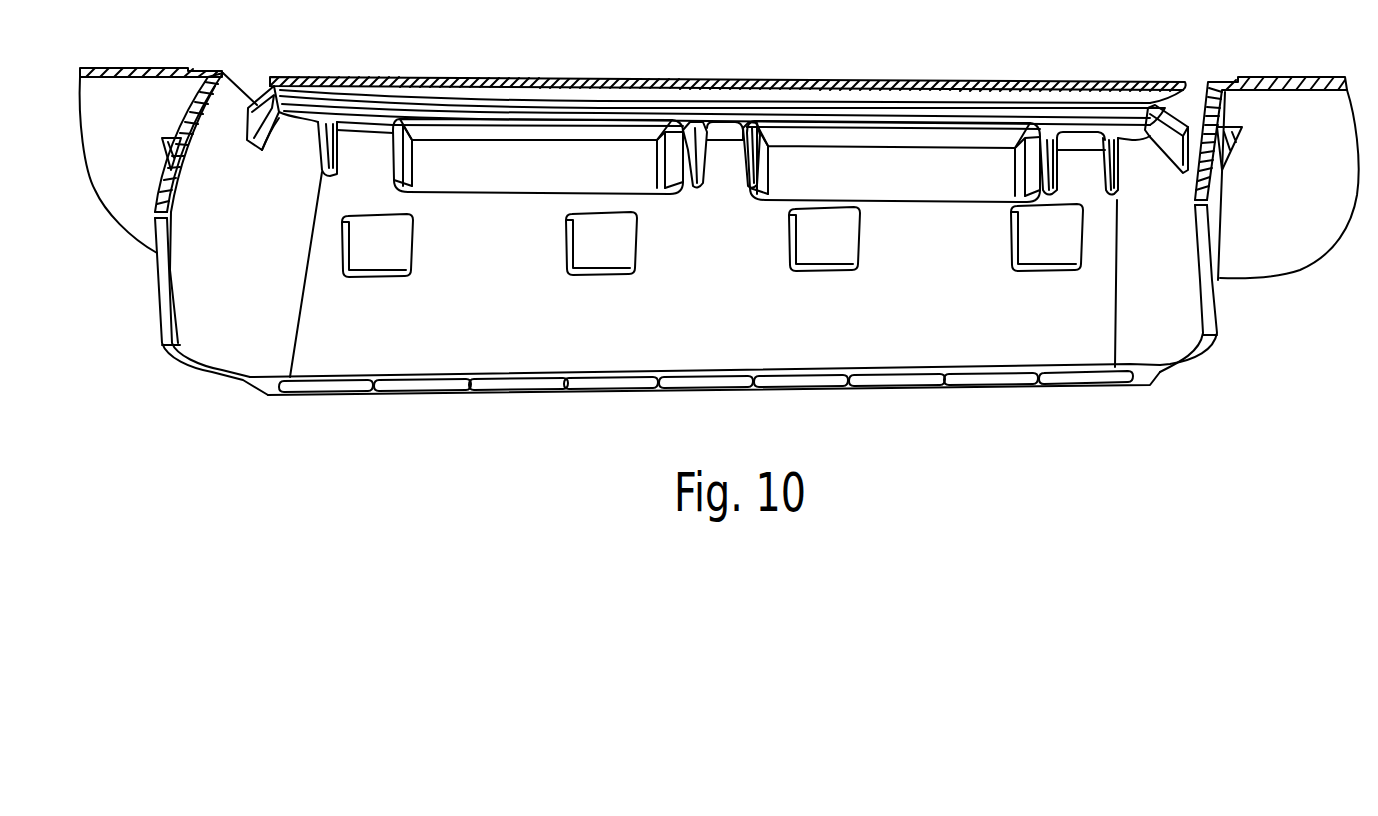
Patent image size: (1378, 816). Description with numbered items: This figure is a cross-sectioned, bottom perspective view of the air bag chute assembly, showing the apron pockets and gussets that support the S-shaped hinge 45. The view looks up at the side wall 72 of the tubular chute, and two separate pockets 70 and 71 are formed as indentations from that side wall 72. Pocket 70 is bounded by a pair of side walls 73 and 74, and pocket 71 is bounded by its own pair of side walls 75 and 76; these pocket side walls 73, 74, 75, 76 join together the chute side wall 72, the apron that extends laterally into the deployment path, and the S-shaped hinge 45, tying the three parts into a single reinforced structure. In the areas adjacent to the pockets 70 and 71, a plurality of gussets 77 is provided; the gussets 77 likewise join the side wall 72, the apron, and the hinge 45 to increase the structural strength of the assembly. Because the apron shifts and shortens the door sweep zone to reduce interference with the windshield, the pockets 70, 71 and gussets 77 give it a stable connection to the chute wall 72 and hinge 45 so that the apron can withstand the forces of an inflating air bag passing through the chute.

The S-shaped hinge 45 is at (906, 92).
The pocket 70 is at (509, 172).
The pocket 71 is at (937, 186).
The side wall 72 is at (562, 330).
The side wall 73 is at (390, 170).
The side wall 74 is at (692, 186).
The side wall 75 is at (748, 186).
The side wall 76 is at (1052, 155).
The gussets 77 is at (320, 138).